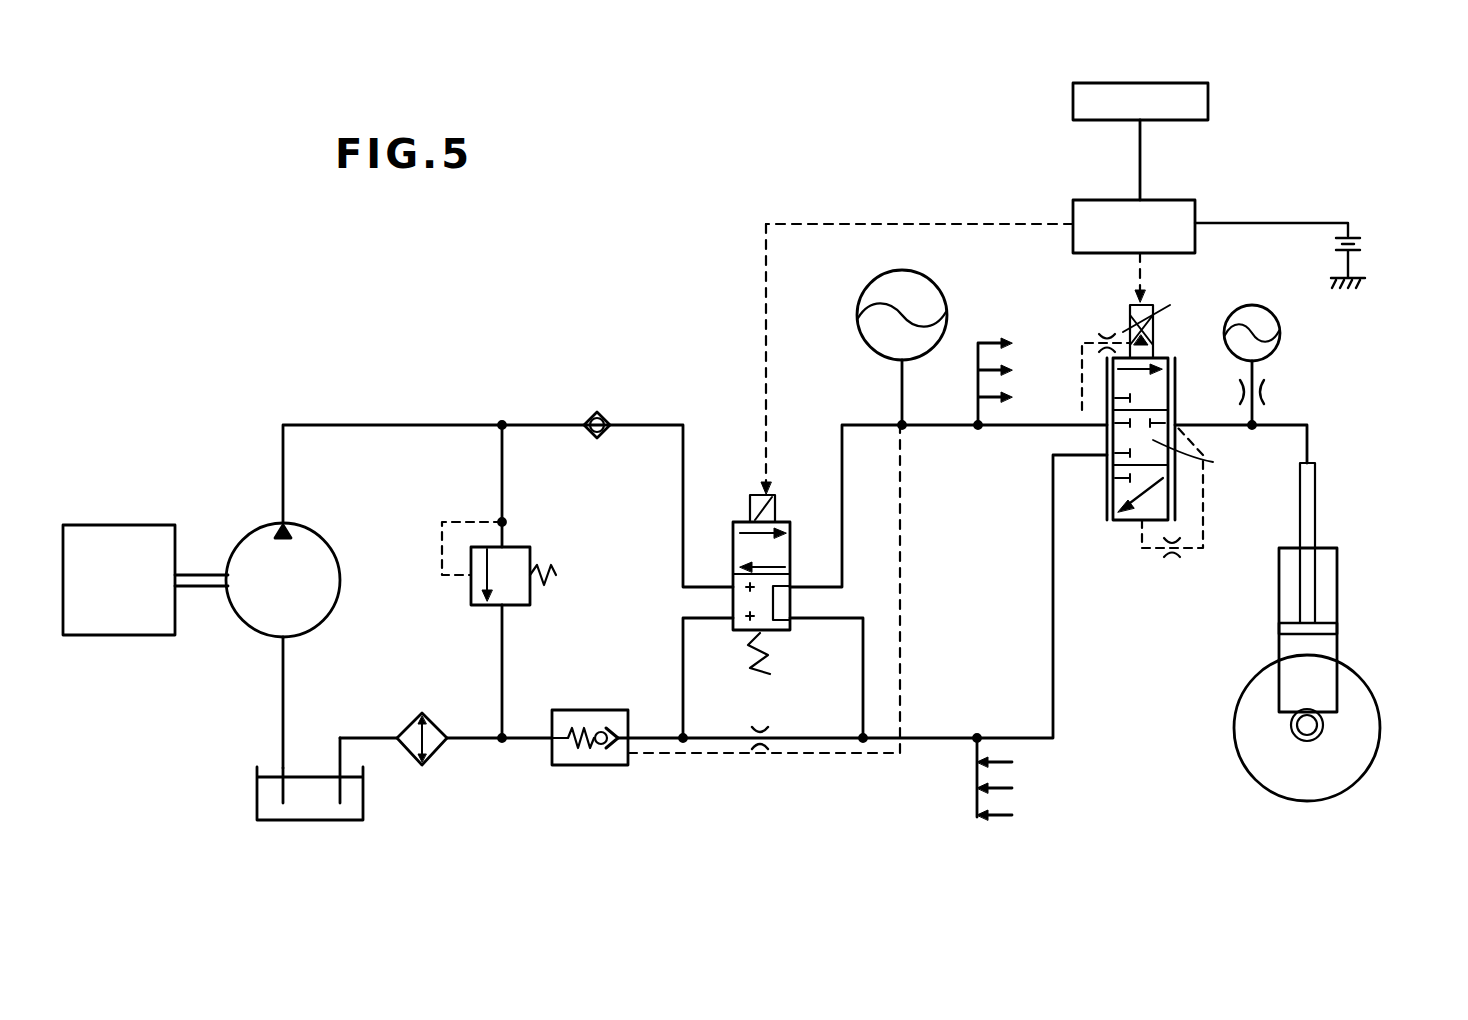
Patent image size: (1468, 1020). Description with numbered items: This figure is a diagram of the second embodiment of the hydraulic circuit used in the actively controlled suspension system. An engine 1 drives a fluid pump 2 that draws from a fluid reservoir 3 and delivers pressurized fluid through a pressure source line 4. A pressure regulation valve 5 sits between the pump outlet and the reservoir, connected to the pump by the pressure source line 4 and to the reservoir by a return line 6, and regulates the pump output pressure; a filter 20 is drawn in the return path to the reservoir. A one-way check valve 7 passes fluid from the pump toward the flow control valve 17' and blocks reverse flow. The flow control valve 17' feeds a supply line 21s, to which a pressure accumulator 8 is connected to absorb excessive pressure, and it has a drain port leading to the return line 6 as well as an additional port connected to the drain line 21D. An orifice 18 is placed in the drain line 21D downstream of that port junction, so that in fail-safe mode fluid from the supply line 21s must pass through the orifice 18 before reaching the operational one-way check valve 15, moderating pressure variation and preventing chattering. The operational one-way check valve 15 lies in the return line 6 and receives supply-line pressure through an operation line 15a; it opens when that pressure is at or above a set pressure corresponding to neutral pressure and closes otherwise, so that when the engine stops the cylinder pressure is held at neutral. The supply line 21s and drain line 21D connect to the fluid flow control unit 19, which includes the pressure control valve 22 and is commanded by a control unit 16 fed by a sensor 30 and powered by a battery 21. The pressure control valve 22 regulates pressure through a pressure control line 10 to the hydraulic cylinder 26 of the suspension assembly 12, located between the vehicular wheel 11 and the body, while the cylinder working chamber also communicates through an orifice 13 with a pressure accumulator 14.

The engine 1 is at (143, 523).
The fluid pump 2 is at (334, 537).
The fluid reservoir 3 is at (316, 824).
The pressure source line 4 is at (390, 422).
The pressure regulation valve 5 is at (534, 548).
The return line 6 is at (487, 744).
The one-way check valve 7 is at (603, 412).
The pressure accumulator 8 is at (950, 311).
The pressure control line 10 is at (1318, 431).
The vehicular wheel 11 is at (1274, 796).
The suspension assembly 12 is at (1342, 611).
The orifice 13 is at (1273, 390).
The pressure accumulator 14 is at (1268, 307).
The operational one-way check valve 15 is at (608, 768).
The operation line 15a is at (905, 611).
The control unit 16 is at (1151, 198).
The flow control valve 17' is at (895, 481).
The orifice 18 is at (757, 722).
The fluid flow control unit 19 is at (1127, 524).
The filter 20 is at (420, 768).
The battery 21 is at (1362, 243).
The supply line 21s is at (960, 428).
The drain line 21D is at (1055, 660).
The pressure control valve 22 is at (1245, 480).
The hydraulic cylinder 26 is at (1328, 647).
The sensor 30 is at (1215, 96).